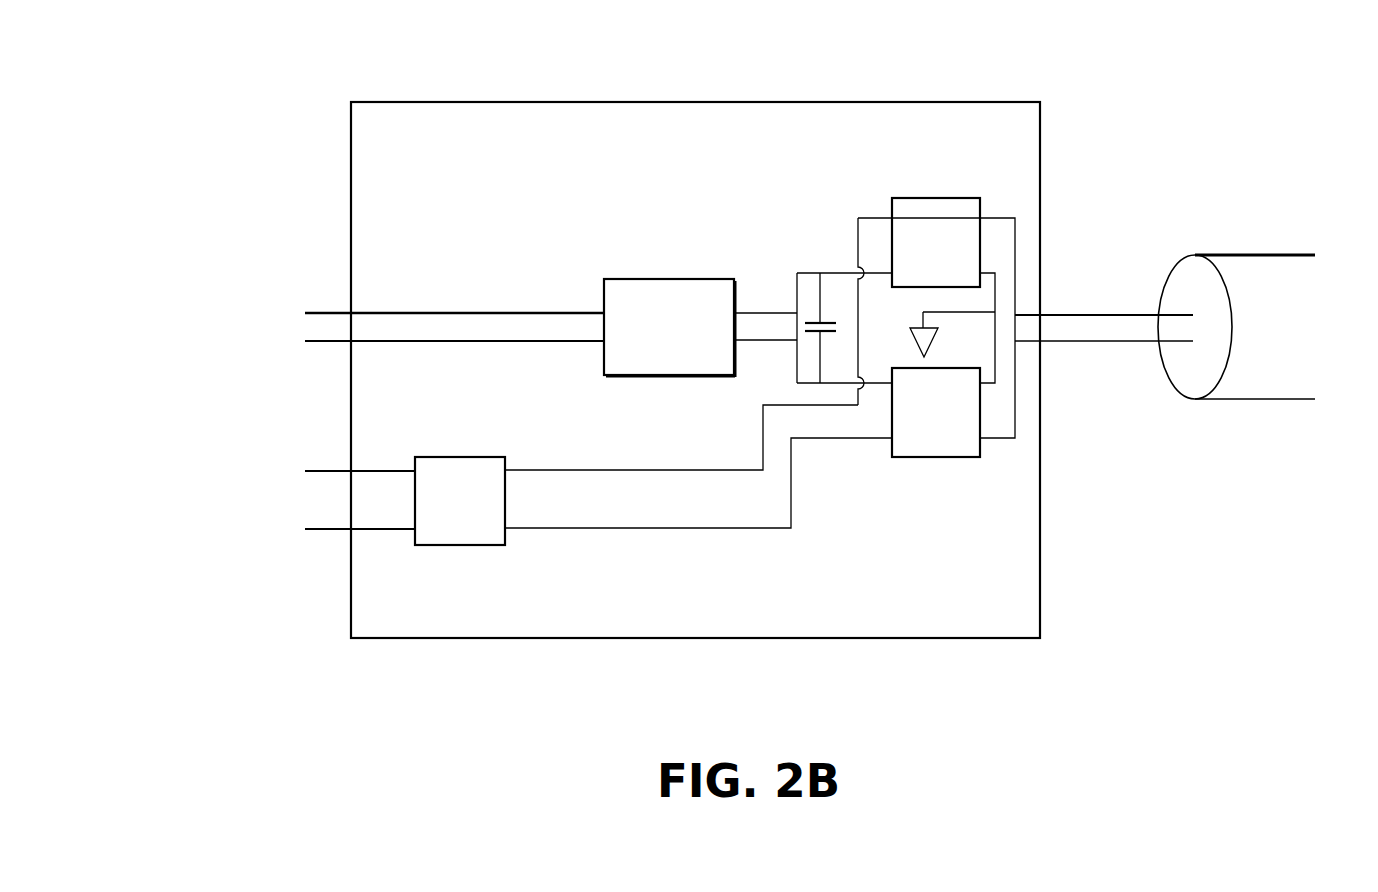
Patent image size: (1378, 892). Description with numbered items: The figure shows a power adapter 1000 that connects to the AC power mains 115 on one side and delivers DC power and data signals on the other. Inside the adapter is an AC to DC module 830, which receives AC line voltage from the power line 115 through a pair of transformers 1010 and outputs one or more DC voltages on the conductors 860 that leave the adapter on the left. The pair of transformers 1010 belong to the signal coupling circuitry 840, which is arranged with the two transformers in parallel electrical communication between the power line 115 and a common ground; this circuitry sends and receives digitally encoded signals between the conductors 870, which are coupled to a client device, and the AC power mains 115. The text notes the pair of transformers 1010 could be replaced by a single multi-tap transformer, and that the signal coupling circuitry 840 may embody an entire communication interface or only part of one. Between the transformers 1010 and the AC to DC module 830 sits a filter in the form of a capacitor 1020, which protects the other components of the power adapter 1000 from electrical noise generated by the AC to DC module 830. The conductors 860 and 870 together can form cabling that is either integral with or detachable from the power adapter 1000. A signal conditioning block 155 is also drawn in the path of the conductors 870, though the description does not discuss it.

The power adapter 1000 is at (362, 100).
The signal coupling circuitry 840 is at (632, 575).
The conductors 860 is at (330, 312).
The conductors 870 is at (330, 470).
The signal conditioner 155 is at (450, 457).
The AC to DC module 830 is at (627, 279).
The capacitor 1020 is at (793, 328).
The pair of transformers 1010 is at (923, 198).
The AC power mains 115 is at (1225, 255).